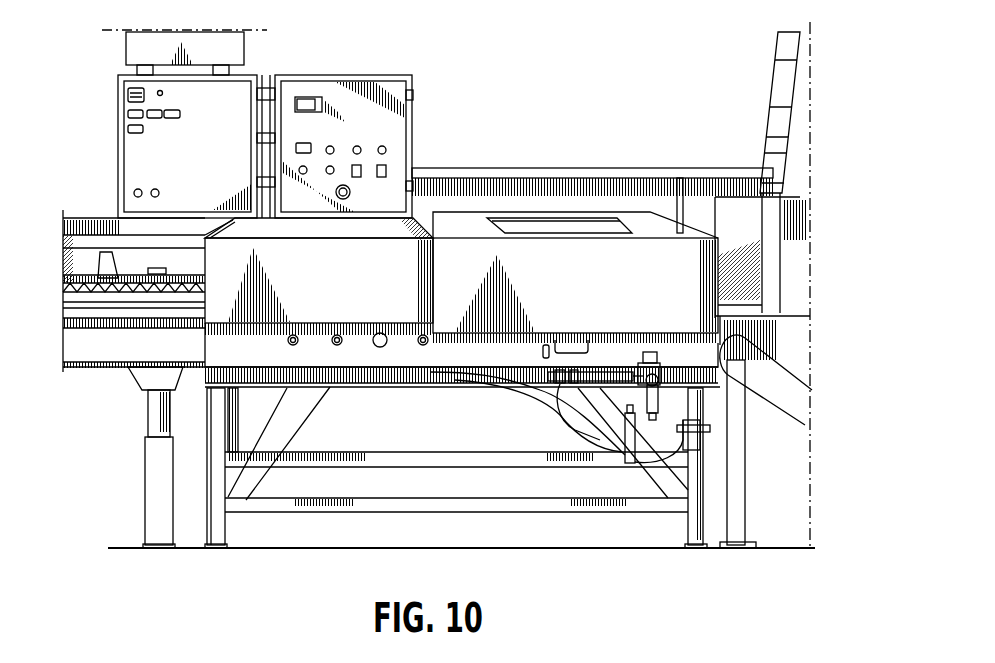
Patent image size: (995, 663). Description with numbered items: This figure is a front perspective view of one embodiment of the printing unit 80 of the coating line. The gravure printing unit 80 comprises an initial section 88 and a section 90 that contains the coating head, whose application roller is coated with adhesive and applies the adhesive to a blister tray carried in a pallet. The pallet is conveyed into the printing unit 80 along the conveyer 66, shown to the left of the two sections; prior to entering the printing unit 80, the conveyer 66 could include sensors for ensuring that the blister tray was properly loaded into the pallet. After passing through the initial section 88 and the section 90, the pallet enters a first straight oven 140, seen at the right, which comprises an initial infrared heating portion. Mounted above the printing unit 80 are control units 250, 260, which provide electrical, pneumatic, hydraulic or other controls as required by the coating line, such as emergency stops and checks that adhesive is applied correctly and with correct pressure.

The control unit 250 is at (160, 163).
The control unit 260 is at (373, 121).
The initial section 88 is at (358, 265).
The section containing the coating head 90 is at (566, 270).
The first straight oven 140 is at (733, 220).
The conveyer 66 is at (115, 295).
The printing unit 80 is at (429, 350).